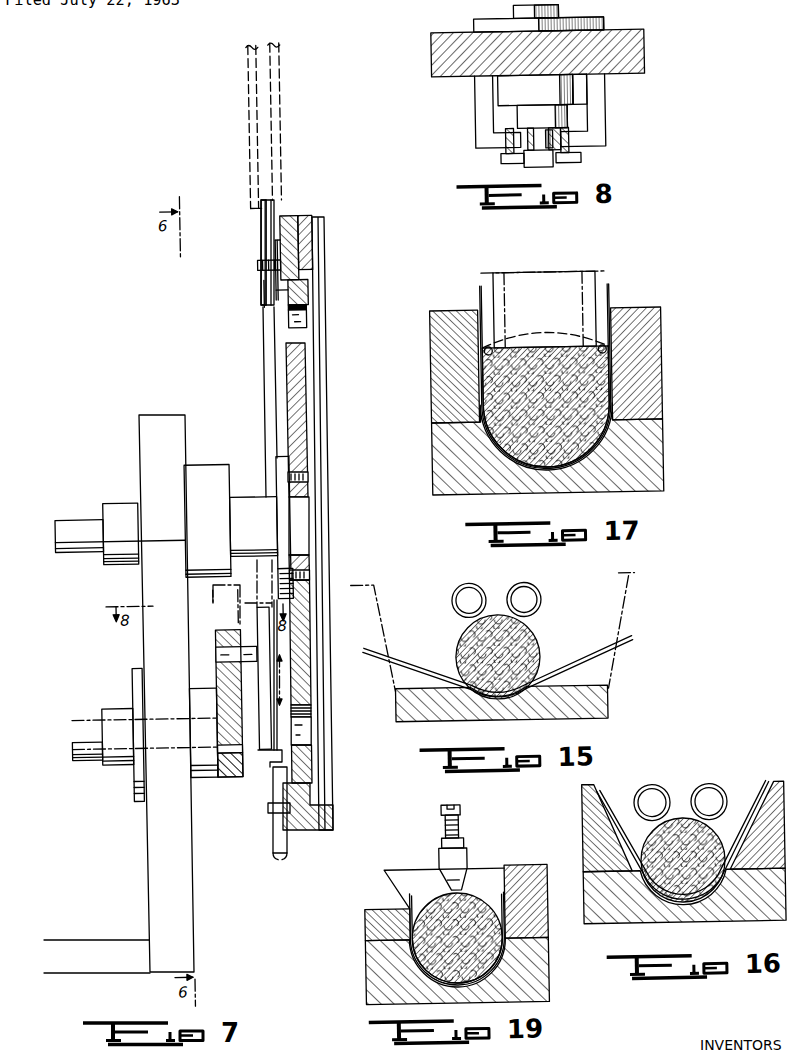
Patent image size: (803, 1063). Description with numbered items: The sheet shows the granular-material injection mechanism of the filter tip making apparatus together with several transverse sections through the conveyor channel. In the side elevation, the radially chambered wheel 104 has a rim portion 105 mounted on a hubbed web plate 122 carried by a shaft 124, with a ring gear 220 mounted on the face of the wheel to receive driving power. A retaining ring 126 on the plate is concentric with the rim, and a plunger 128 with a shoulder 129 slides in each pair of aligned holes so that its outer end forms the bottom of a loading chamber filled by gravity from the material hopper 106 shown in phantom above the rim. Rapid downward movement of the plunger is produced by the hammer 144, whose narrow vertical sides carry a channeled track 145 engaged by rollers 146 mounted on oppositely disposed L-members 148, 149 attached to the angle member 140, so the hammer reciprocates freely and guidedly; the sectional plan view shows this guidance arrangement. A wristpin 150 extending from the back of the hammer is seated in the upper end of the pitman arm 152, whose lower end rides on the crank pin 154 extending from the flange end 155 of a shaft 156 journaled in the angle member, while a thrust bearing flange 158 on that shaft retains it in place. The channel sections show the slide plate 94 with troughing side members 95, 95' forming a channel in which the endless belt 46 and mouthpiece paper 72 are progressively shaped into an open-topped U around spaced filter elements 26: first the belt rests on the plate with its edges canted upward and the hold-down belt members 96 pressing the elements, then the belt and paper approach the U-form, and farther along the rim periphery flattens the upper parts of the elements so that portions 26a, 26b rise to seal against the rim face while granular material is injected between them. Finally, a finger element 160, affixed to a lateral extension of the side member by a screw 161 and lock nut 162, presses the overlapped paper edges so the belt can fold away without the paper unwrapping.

In FIG. 17, the filter elements 26 is at (600, 392).
In FIG. 15, the filter elements 26 is at (530, 641).
In FIG. 19, the filter elements 26 is at (468, 898).
In FIG. 16, the filter elements 26 is at (722, 830).
In FIG. 17, the portion of filter element 26a is at (608, 351).
In FIG. 17, the portion of filter element 26b is at (484, 352).
In FIG. 17, the endless belt 46 is at (612, 431).
In FIG. 15, the endless belt 46 is at (587, 655).
In FIG. 19, the endless belt 46 is at (409, 900).
In FIG. 16, the endless belt 46 is at (615, 865).
In FIG. 17, the mouthpiece paper 72 is at (613, 293).
In FIG. 15, the mouthpiece paper 72 is at (610, 652).
In FIG. 19, the mouthpiece paper 72 is at (440, 893).
In FIG. 16, the mouthpiece paper 72 is at (764, 796).
In FIG. 17, the slide plate 94 is at (654, 466).
In FIG. 15, the slide plate 94 is at (607, 696).
In FIG. 19, the slide plate 94 is at (538, 976).
In FIG. 16, the slide plate 94 is at (752, 912).
In FIG. 17, the troughing side member 95 is at (437, 366).
In FIG. 15, the troughing side member 95 is at (380, 639).
In FIG. 19, the troughing side member 95 is at (539, 901).
In FIG. 16, the troughing side member 95 is at (597, 828).
In FIG. 17, the troughing side member 95' is at (651, 360).
In FIG. 15, the troughing side member 95' is at (617, 631).
In FIG. 19, the troughing side member 95' is at (422, 904).
In FIG. 16, the troughing side member 95' is at (756, 816).
In FIG. 15, the hold-down belt members 96 is at (462, 607).
In FIG. 16, the hold-down belt members 96 is at (650, 786).
In FIG. 7, the radially chambered wheel 104 is at (328, 446).
In FIG. 17, the radially chambered wheel 104 is at (591, 268).
In FIG. 7, the rim portion 105 is at (281, 217).
In FIG. 17, the rim portion 105 is at (600, 286).
In FIG. 7, the material hopper 106 is at (270, 143).
In FIG. 7, the hubbed web plate 122 is at (301, 299).
In FIG. 7, the shaft 124 is at (302, 513).
In FIG. 7, the retaining ring 126 is at (262, 283).
In FIG. 7, the plunger 128 is at (266, 302).
In FIG. 7, the shoulder 129 is at (257, 265).
In FIG. 7, the angle member 140 is at (190, 863).
In FIG. 8, the angle member 140 is at (645, 52).
In FIG. 7, the hammer 144 is at (257, 566).
In FIG. 8, the hammer 144 is at (531, 164).
In FIG. 7, the channeled track 145 is at (264, 771).
In FIG. 8, the rollers 146 is at (500, 158).
In FIG. 8, the L-member 148 is at (477, 101).
In FIG. 8, the L-member 149 is at (598, 79).
In FIG. 7, the wristpin 150 is at (240, 651).
In FIG. 8, the wristpin 150 is at (549, 150).
In FIG. 7, the pitman arm 152 is at (215, 612).
In FIG. 8, the pitman arm 152 is at (567, 115).
In FIG. 7, the crank pin 154 is at (230, 769).
In FIG. 7, the flange end 155 is at (191, 700).
In FIG. 8, the flange end 155 is at (573, 93).
In FIG. 7, the shaft 156 is at (100, 748).
In FIG. 7, the thrust bearing flange 158 is at (133, 700).
In FIG. 8, the thrust bearing flange 158 is at (475, 27).
In FIG. 19, the finger element 160 is at (469, 875).
In FIG. 19, the screw 161 is at (462, 810).
In FIG. 19, the lock nut 162 is at (462, 838).
In FIG. 7, the ring gear 220 is at (318, 218).